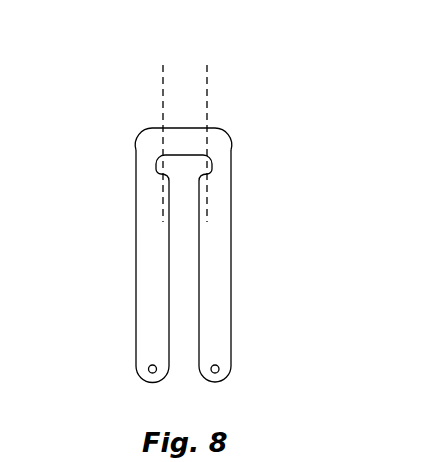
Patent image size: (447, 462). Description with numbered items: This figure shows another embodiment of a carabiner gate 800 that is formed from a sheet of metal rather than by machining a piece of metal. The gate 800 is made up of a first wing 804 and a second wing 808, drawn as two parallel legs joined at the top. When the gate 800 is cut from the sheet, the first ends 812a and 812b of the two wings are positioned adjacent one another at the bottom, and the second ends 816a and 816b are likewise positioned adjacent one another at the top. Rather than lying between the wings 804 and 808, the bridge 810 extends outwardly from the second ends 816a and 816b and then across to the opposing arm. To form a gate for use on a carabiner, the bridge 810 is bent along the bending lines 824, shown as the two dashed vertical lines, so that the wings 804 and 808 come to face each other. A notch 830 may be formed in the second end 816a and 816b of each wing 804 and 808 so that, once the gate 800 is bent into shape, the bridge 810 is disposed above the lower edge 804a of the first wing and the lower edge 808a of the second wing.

The carabiner gate 800 is at (322, 166).
The first wing 804 is at (218, 297).
The lower edge of first wing 804a is at (196, 264).
The second wing 808 is at (136, 305).
The lower edge of second wing 808a is at (171, 252).
The bridge 810 is at (184, 136).
The first end of first wing 812a is at (215, 385).
The first end of second wing 812b is at (141, 385).
The second end of first wing 816a is at (227, 198).
The second end of second wing 816b is at (145, 165).
The bending lines 824 is at (162, 89).
The notch 830 is at (214, 164).